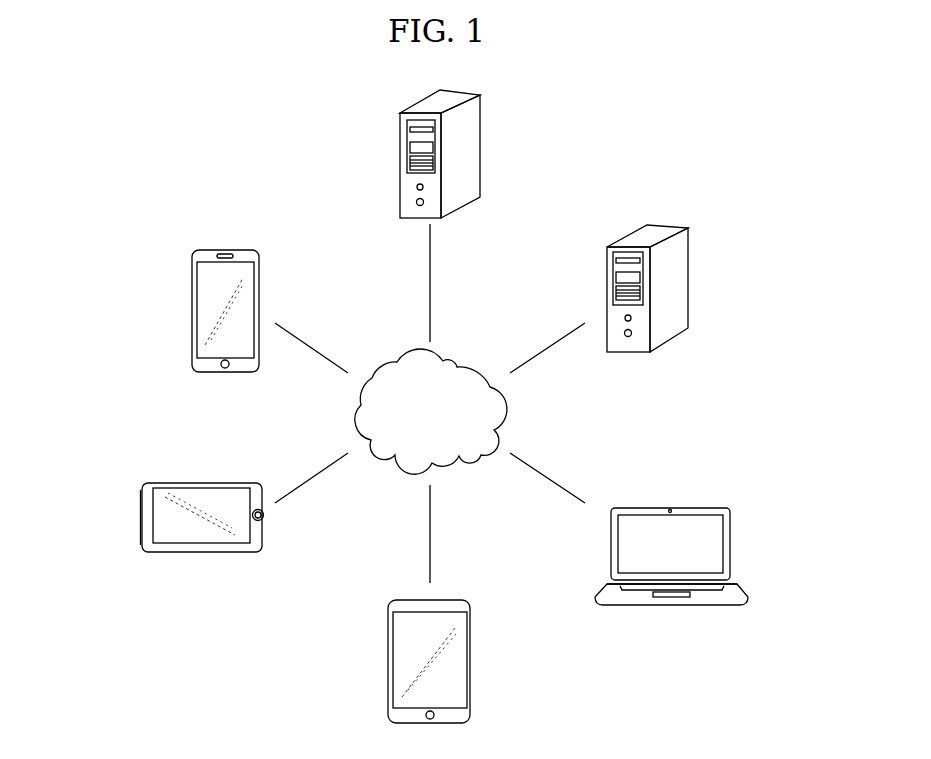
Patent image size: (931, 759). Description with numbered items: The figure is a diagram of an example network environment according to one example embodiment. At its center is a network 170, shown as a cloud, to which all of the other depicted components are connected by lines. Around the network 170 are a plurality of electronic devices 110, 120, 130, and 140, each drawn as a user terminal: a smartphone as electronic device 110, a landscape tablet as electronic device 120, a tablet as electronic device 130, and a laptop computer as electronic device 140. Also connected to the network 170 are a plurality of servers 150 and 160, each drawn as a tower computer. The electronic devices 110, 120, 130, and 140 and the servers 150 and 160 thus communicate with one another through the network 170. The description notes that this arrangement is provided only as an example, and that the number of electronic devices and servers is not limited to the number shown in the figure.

The electronic device 110 is at (192, 312).
The electronic device 120 is at (141, 512).
The electronic device 130 is at (470, 660).
The electronic device 140 is at (732, 547).
The server 150 is at (690, 275).
The server 160 is at (480, 142).
The network 170 is at (455, 363).